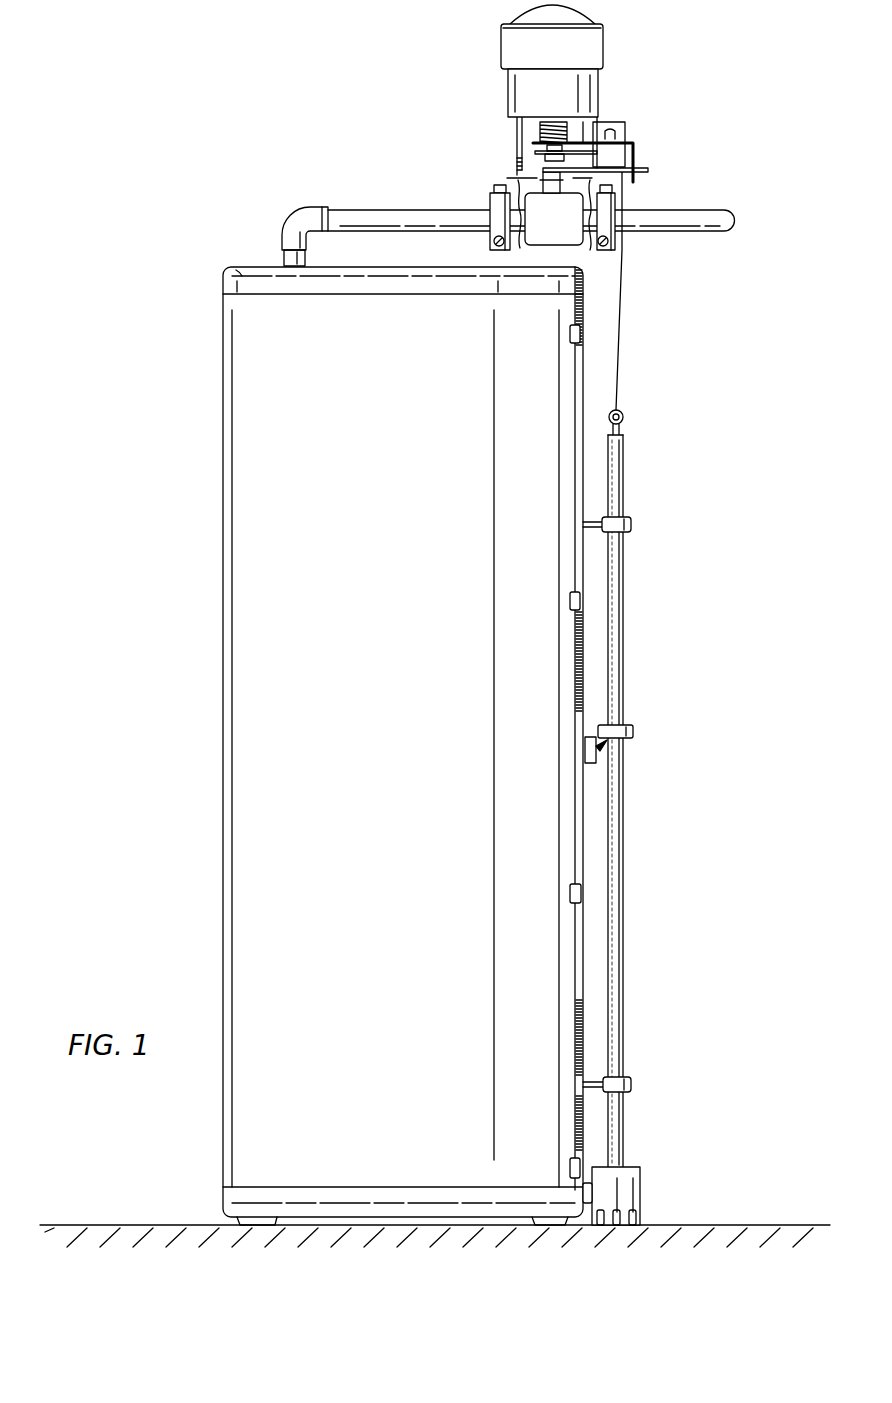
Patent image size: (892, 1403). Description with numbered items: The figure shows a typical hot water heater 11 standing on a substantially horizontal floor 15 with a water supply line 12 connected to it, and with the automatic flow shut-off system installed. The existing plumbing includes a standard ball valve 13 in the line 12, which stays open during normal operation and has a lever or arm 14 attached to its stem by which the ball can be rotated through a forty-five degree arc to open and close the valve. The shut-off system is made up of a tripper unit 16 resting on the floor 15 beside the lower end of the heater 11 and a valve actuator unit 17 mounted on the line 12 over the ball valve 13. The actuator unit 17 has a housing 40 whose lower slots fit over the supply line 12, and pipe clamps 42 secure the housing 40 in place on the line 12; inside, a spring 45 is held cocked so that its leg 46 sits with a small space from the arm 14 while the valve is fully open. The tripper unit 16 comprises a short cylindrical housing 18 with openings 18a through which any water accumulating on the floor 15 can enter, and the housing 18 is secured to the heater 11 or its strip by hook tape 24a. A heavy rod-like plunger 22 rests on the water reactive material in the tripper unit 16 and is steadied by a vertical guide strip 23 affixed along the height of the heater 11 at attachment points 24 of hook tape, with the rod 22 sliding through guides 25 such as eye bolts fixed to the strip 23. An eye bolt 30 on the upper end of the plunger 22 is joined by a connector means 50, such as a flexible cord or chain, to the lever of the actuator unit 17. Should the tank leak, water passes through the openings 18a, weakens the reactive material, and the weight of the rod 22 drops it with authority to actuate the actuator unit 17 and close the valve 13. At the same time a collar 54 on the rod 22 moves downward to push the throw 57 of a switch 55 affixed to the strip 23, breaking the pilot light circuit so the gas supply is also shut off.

The hot water heater 11 is at (389, 727).
The water supply line 12 is at (386, 210).
The ball valve 13 is at (567, 229).
The lever or arm 14 is at (648, 174).
The floor 15 is at (745, 1225).
The tripper unit 16 is at (645, 1147).
The valve actuator unit 17 is at (636, 78).
The housing 18 is at (641, 1195).
The openings 18a is at (628, 1222).
The plunger 22 is at (624, 640).
The vertical guide strip 23 is at (578, 388).
The attachment points 24 is at (570, 333).
The hook tape 24a is at (586, 1195).
The guides 25 is at (631, 524).
The eye bolt 30 is at (624, 416).
The housing 40 is at (515, 83).
The pipe clamps 42 is at (490, 200).
The spring 45 is at (540, 133).
The leg 46 is at (640, 155).
The connector means 50 is at (623, 316).
The collar 54 is at (633, 730).
The switch 55 is at (585, 762).
The throw 57 is at (605, 752).